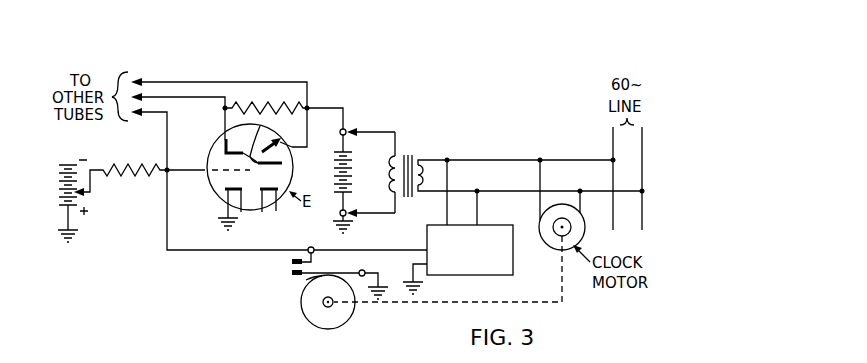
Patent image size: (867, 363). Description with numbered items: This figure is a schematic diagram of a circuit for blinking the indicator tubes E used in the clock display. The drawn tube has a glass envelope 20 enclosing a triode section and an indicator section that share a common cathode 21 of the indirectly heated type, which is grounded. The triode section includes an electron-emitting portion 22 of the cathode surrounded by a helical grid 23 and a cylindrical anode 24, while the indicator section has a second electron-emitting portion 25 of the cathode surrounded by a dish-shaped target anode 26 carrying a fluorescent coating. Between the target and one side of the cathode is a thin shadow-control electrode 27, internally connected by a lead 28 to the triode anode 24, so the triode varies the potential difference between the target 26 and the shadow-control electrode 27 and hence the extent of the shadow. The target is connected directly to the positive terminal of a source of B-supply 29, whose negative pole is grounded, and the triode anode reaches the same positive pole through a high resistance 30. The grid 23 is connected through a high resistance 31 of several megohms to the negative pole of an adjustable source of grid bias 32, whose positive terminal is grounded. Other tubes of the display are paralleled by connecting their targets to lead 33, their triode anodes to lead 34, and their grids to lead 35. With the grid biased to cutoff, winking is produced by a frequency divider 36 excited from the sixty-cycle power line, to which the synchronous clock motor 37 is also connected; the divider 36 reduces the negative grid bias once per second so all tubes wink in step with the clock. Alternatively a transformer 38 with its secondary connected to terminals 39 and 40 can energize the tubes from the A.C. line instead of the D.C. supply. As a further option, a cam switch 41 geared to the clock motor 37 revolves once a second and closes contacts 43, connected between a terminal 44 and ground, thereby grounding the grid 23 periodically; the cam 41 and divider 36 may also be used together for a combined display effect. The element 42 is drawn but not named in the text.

The glass envelope 20 is at (208, 196).
The common cathode 21 is at (262, 212).
The electron-emitting portion of the cathode 22 is at (276, 211).
The helical grid 23 is at (222, 170).
The cylindrical anode 24 is at (225, 140).
The second electron-emitting portion of the cathode 25 is at (241, 212).
The dish-shaped target anode 26 is at (291, 153).
The shadow-control electrode 27 is at (285, 165).
The lead 28 is at (260, 128).
The source of B-supply 29 is at (353, 168).
The high resistance 30 is at (229, 106).
The high resistance 31 is at (104, 168).
The source of grid bias 32 is at (60, 196).
The lead 33 is at (148, 82).
The lead 34 is at (184, 96).
The lead 35 is at (166, 118).
The frequency divider 36 is at (513, 264).
The synchronous clock motor 37 is at (540, 220).
The transformer 38 is at (433, 151).
The terminal 39 is at (346, 128).
The terminal 40 is at (340, 214).
The cam switch 41 is at (296, 318).
The cam lobe 42 is at (312, 325).
The contacts 43 is at (291, 262).
The terminal 44 is at (314, 250).